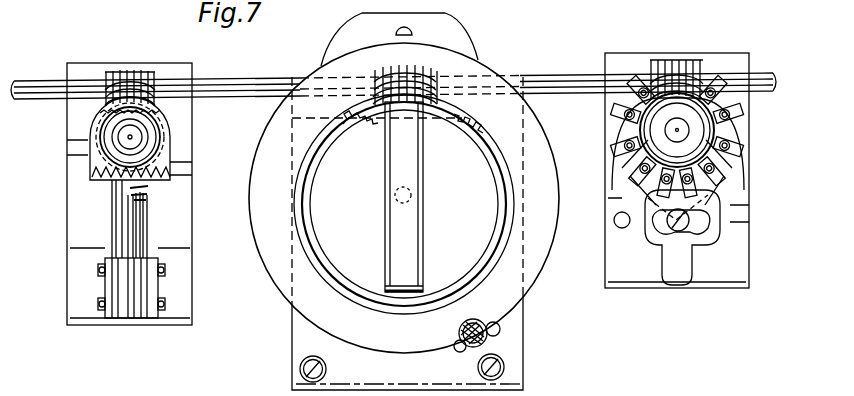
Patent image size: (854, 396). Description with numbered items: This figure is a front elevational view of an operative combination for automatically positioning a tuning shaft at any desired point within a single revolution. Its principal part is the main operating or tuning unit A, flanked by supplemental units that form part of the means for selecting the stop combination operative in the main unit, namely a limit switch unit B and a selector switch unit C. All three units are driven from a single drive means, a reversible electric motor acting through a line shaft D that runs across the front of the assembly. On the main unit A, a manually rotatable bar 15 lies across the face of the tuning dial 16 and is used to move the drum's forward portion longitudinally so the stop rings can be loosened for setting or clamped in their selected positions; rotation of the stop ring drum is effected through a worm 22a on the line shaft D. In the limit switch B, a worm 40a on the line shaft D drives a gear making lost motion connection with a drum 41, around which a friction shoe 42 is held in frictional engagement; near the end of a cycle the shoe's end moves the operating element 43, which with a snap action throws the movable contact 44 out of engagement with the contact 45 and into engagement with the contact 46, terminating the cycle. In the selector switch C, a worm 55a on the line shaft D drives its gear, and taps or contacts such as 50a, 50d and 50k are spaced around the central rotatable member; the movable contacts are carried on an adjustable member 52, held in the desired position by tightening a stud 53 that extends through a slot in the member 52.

The main operating or tuning unit A is at (492, 60).
The limit switch unit B is at (135, 63).
The selector switch unit C is at (692, 53).
The line shaft D is at (559, 77).
The manually rotatable bar 15 is at (411, 258).
The tuning dial 16 is at (492, 260).
The worm 22a is at (408, 66).
The worm 40a is at (150, 73).
The drum 41 is at (162, 138).
The friction shoe 42 is at (90, 132).
The operating element 43 is at (170, 183).
The movable contact 44 is at (130, 211).
The contact 45 is at (128, 222).
The contact 46 is at (148, 222).
The tap or contact 50a is at (700, 62).
The tap or contact 50d is at (740, 140).
The tap or contact 50k is at (628, 180).
The adjustable member 52 is at (707, 235).
The stud 53 is at (677, 232).
The worm 55a is at (678, 62).